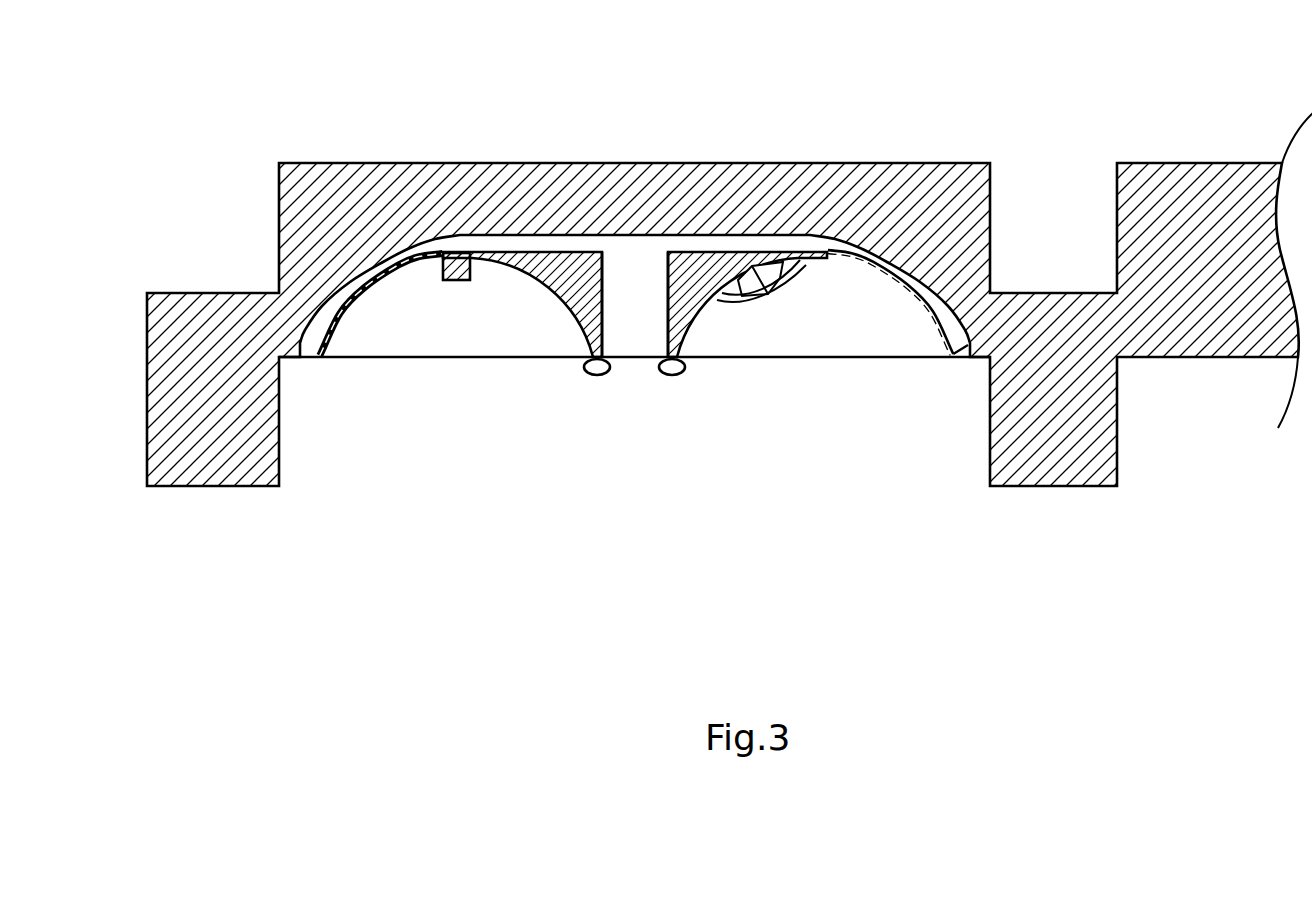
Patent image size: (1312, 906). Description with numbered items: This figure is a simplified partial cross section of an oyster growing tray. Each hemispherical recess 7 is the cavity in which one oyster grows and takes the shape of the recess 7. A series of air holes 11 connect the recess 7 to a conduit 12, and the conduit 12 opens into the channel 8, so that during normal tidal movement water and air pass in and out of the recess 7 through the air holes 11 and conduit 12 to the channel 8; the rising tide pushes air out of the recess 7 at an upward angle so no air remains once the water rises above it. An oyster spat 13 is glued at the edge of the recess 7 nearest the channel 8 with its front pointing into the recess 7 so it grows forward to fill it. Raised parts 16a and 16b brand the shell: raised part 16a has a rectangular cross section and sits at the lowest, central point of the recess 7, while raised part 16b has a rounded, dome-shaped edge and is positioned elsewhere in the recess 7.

The recess 7 is at (433, 320).
The channel 8 is at (628, 262).
The air holes 11 is at (420, 254).
The conduit 12 is at (560, 250).
The oyster spat 13 is at (668, 380).
The raised part 16a is at (465, 284).
The raised part 16b is at (733, 311).